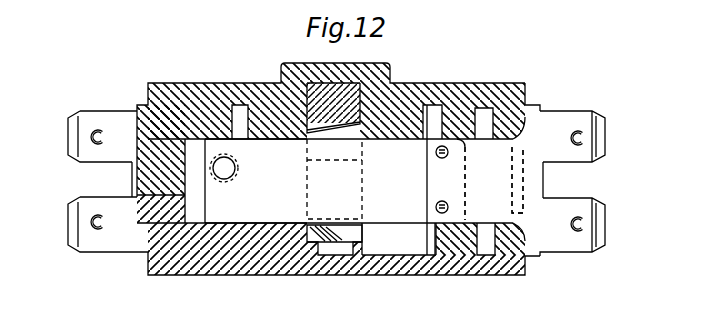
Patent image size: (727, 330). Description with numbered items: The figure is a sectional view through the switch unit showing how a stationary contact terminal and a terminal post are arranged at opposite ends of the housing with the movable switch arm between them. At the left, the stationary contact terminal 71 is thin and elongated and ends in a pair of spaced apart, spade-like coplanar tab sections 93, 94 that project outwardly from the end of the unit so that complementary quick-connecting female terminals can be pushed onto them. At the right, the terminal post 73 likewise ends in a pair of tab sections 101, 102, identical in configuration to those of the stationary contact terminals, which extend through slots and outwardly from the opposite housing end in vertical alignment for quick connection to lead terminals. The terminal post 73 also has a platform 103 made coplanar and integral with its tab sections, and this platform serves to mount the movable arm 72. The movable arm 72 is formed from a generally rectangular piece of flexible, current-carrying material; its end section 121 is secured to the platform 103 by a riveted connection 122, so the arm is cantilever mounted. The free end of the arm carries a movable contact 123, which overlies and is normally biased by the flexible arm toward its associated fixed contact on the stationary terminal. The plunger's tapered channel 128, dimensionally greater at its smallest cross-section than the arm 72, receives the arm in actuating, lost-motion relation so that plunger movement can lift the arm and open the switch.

The tab section 94 is at (100, 117).
The tab section 93 is at (113, 238).
The stationary contact terminal 71 is at (131, 180).
The tab section 101 is at (568, 118).
The tab section 102 is at (572, 238).
The terminal post 73 is at (544, 178).
The movable arm 72 is at (292, 210).
The movable contact 123 is at (238, 170).
The riveted connection 122 is at (437, 203).
The tapered channel 128 is at (363, 238).
The end section 121 is at (415, 203).
The platform 103 is at (490, 200).